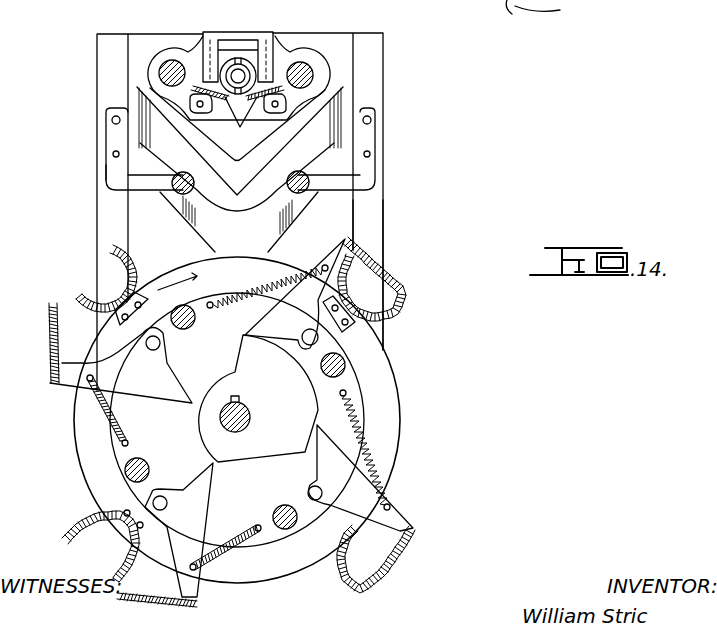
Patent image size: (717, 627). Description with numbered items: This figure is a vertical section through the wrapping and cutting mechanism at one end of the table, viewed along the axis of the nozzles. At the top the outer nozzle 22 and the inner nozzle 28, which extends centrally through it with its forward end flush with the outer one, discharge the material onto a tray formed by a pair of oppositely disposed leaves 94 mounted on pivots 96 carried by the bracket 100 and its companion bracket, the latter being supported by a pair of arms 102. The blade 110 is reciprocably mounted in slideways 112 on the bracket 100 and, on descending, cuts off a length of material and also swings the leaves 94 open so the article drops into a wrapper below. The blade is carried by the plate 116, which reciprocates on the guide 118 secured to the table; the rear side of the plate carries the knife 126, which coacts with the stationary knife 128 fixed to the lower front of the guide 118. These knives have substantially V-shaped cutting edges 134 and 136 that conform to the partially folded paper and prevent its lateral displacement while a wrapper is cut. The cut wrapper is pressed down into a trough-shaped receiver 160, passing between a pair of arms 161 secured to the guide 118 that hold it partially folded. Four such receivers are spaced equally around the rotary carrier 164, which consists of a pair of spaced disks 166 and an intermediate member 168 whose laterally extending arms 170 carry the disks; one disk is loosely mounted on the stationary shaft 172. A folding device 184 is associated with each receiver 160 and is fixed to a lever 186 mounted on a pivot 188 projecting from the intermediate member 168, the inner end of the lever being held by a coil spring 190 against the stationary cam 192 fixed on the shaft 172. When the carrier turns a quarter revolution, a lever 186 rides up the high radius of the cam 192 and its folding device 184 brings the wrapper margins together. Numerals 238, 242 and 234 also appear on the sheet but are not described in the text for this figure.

The nozzle 22 is at (217, 77).
The slideways 112 is at (203, 62).
The blade 110 is at (234, 38).
The bracket 100 is at (290, 53).
The nozzle 28 is at (282, 67).
The arms 102 is at (160, 68).
The guide 118 is at (377, 67).
The cutting edge 134 is at (143, 115).
The knife 126 is at (310, 120).
The cutting edge 136 is at (147, 165).
The arms 161 is at (120, 176).
The stationary knife 128 is at (317, 170).
The plate 116 is at (343, 205).
The pivots 96 is at (200, 103).
The leaves 94 is at (252, 146).
The receiver 160 is at (110, 250).
The folding device 184 is at (390, 272).
The stationary shaft 172 is at (244, 412).
The cam 192 is at (258, 398).
The rotary carrier 164 is at (106, 374).
The disks 166 is at (73, 448).
The intermediate member 168 is at (113, 460).
The arms 170 is at (127, 475).
The pivot 188 is at (308, 493).
The coil spring 190 is at (373, 458).
The lever 186 is at (400, 518).
The part 238 is at (422, 8).
The part 242 is at (557, 8).
The part 234 is at (527, 33).